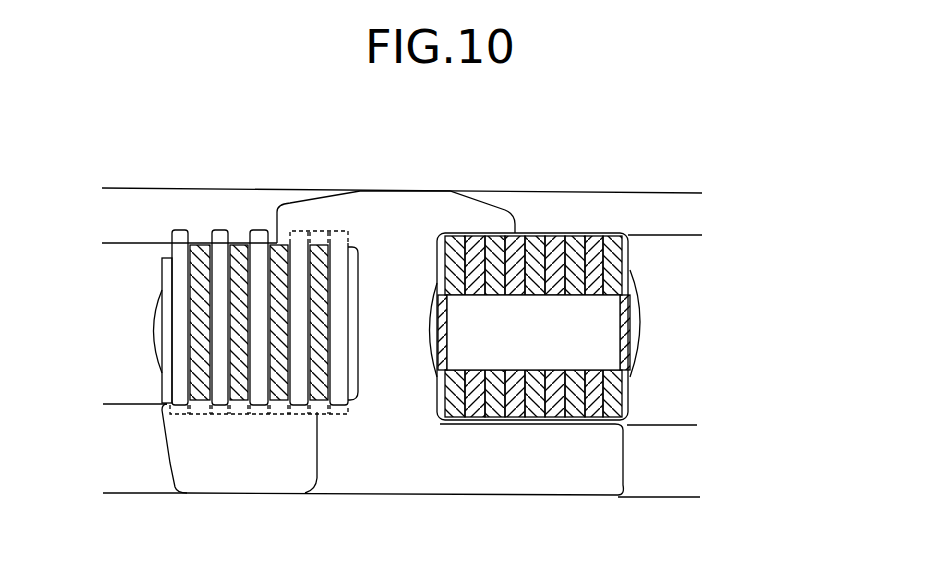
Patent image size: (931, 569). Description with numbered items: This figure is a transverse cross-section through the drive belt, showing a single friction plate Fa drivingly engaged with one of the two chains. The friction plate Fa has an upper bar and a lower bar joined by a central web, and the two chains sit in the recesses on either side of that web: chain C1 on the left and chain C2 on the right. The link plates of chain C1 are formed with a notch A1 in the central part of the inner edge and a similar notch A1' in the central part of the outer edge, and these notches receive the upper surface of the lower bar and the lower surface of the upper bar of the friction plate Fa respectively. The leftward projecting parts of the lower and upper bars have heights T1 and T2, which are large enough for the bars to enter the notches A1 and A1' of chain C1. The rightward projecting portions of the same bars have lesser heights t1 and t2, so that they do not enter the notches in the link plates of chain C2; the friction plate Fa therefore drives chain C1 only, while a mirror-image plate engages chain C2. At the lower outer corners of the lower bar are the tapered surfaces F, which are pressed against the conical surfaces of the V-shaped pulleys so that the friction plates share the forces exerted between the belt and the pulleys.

The friction plate Fa is at (413, 198).
The notch A1 is at (392, 472).
The notch A1' is at (320, 192).
The tapered surface F is at (170, 464).
The chain C1 is at (242, 243).
The chain C2 is at (592, 237).
The height T1 is at (109, 404).
The height T2 is at (110, 188).
The height t1 is at (685, 425).
The height t2 is at (688, 194).